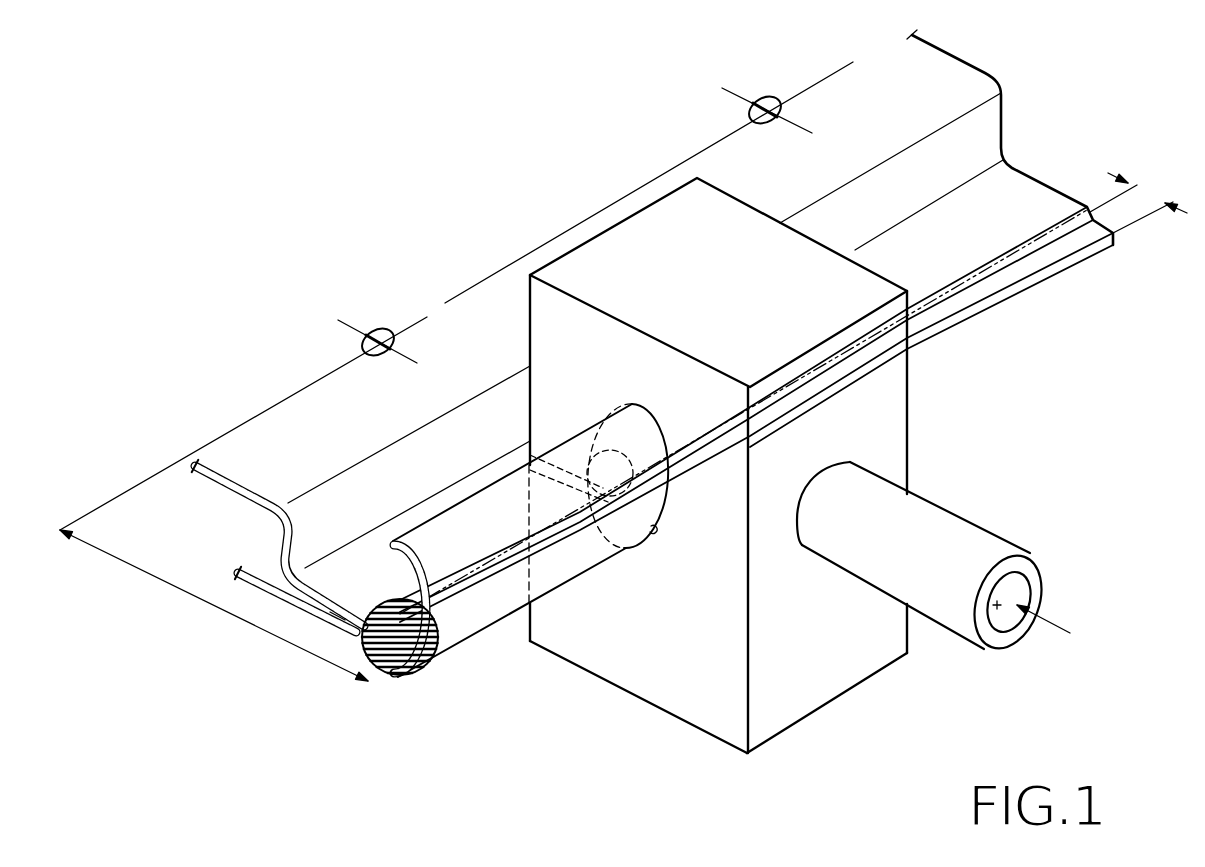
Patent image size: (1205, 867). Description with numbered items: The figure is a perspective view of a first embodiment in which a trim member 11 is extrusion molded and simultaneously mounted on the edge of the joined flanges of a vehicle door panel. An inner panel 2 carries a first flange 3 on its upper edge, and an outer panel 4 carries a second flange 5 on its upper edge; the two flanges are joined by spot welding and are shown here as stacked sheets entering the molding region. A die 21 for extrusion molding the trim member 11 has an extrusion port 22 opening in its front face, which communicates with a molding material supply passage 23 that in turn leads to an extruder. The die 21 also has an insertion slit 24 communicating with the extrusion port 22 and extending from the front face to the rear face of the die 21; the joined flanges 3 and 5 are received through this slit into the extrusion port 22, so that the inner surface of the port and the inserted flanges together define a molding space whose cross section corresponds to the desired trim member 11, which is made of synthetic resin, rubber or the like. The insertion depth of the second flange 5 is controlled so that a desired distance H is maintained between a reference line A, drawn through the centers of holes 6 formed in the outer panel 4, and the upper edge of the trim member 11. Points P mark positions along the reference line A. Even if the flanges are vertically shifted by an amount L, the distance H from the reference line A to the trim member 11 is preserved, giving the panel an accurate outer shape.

The inner panel 2 is at (267, 567).
The first flange 3 is at (333, 608).
The outer panel 4 is at (222, 490).
The second flange 5 is at (337, 613).
The holes 6 is at (385, 355).
The trim member 11 is at (477, 637).
The die 21 is at (910, 412).
The extrusion port 22 is at (652, 531).
The molding material supply passage 23 is at (997, 607).
The insertion slit 24 is at (525, 448).
The reference line A is at (535, 250).
The reference points P is at (380, 330).
The distance H is at (214, 605).
The amount of shift L is at (1147, 193).